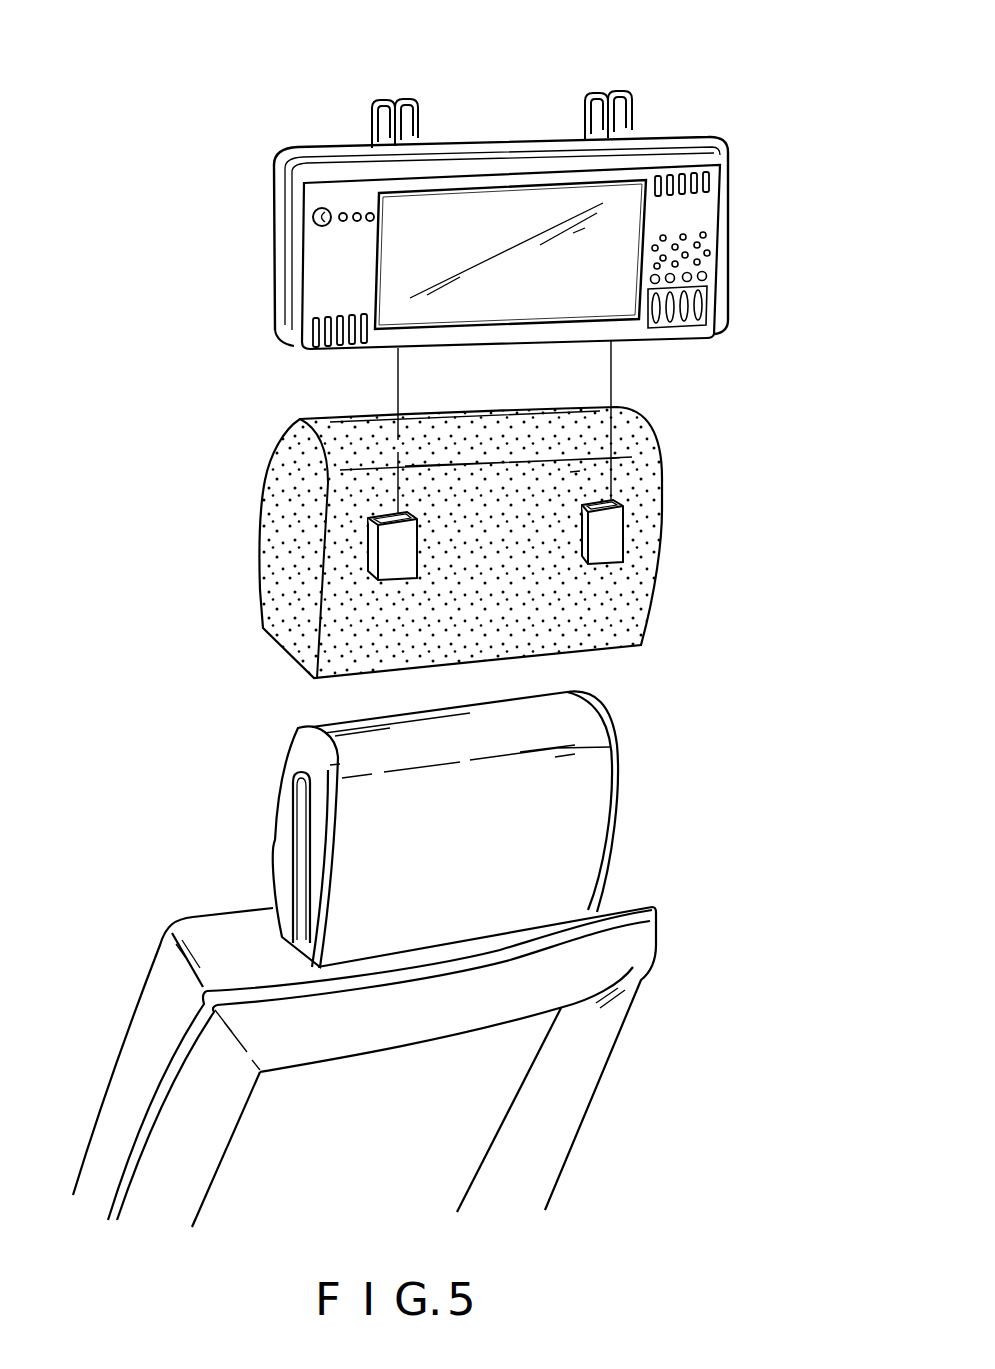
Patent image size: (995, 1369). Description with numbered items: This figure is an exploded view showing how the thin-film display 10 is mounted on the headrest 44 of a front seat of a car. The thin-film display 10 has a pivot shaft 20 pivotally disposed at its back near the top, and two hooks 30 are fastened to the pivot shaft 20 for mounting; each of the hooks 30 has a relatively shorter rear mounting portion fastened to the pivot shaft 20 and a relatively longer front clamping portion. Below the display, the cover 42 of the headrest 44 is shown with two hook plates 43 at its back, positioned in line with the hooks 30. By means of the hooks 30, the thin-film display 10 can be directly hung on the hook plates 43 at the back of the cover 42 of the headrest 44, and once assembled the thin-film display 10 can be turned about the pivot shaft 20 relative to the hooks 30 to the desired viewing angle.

The thin-film display 10 is at (593, 280).
The pivot shaft 20 is at (503, 148).
The hooks 30 is at (598, 97).
The cover 42 is at (583, 652).
The hook plates 43 is at (608, 530).
The headrest 44 is at (587, 823).